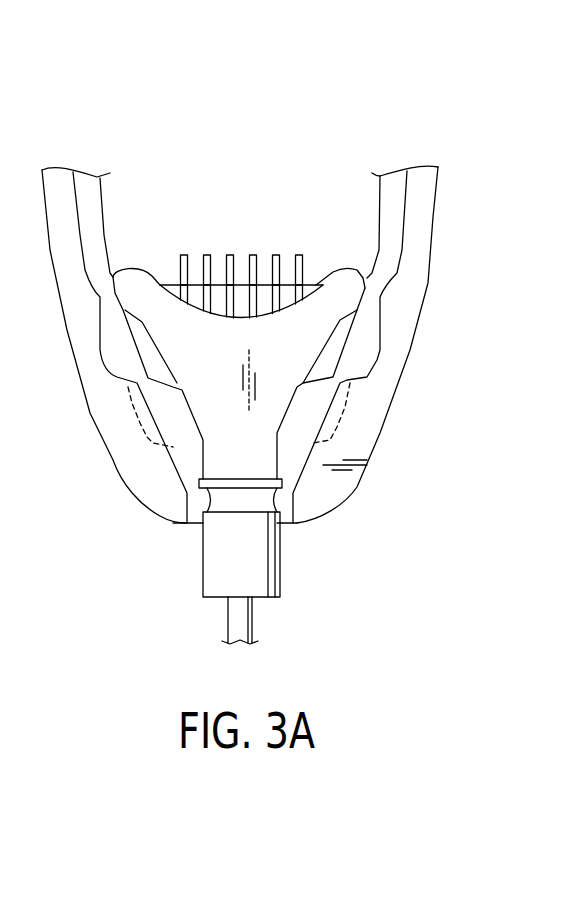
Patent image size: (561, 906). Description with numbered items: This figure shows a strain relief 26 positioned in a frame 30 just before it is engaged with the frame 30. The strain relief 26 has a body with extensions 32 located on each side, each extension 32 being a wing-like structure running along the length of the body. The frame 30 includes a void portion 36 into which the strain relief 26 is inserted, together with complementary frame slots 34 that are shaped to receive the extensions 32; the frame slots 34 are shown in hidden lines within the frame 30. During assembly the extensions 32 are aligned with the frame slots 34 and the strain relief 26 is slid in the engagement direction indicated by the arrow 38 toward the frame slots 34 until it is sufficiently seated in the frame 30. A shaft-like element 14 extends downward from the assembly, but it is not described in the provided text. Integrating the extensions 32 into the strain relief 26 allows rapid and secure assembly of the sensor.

The shaft 14 is at (250, 617).
The strain relief 26 is at (324, 302).
The frame 30 is at (445, 214).
The extensions 32 is at (150, 352).
The frame slot 34 is at (137, 410).
The void portion 36 is at (185, 438).
The arrow 38 is at (240, 220).